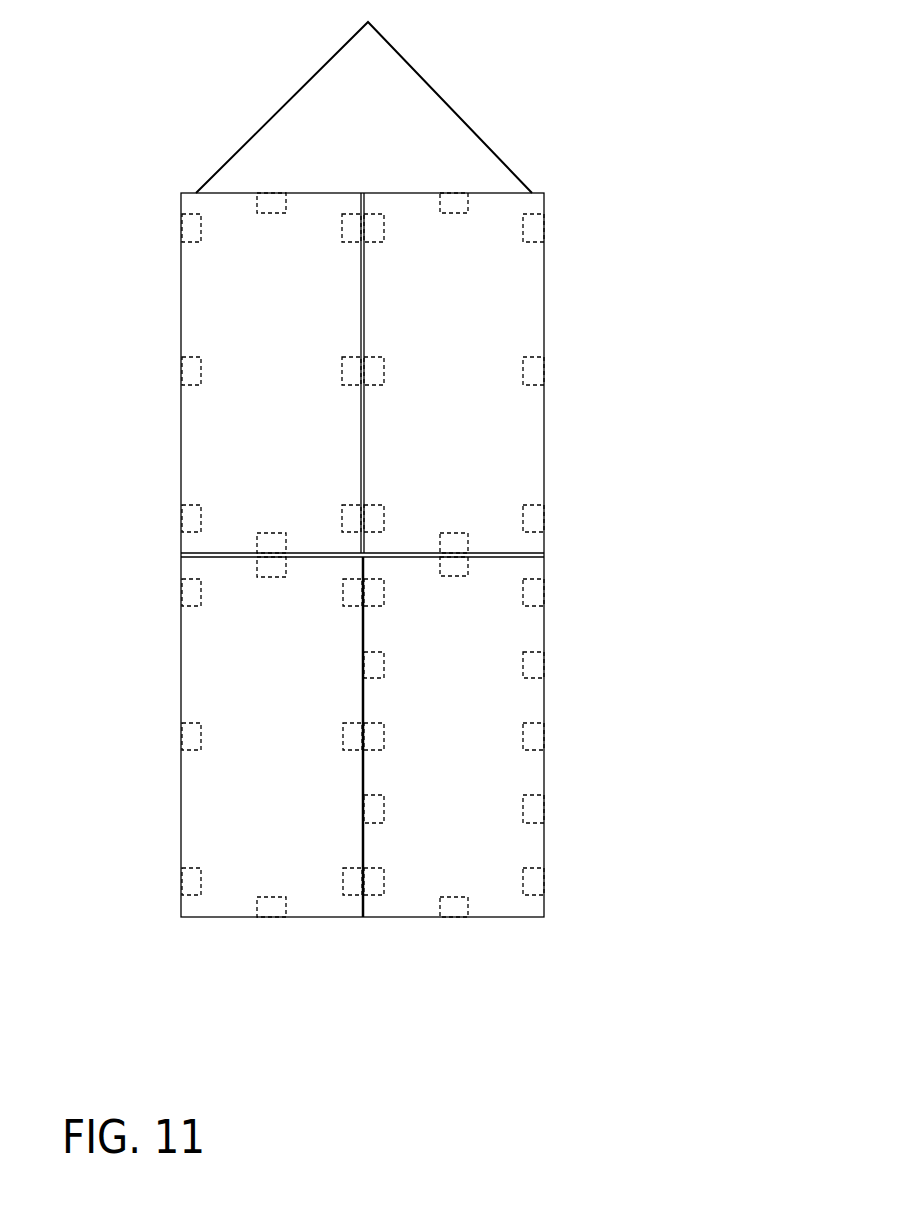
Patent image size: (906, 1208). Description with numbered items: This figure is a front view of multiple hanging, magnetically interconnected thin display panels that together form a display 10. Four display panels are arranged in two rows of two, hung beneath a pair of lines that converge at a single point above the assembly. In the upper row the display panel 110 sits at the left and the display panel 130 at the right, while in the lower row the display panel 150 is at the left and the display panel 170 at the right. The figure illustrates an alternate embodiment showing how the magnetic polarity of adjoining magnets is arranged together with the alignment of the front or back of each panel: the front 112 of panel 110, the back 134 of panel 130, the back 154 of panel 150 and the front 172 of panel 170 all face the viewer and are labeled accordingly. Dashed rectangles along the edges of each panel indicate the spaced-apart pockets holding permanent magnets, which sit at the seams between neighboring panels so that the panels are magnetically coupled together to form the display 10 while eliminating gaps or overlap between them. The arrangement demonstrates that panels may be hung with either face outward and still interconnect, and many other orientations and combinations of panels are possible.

The magnetically interconnected display 10 is at (688, 264).
The display panel 110 is at (190, 373).
The front of panel 112 is at (220, 312).
The display panel 130 is at (497, 373).
The back of panel 134 is at (458, 306).
The display panel 150 is at (214, 737).
The back of panel 154 is at (213, 681).
The display panel 170 is at (517, 737).
The front of panel 172 is at (520, 689).